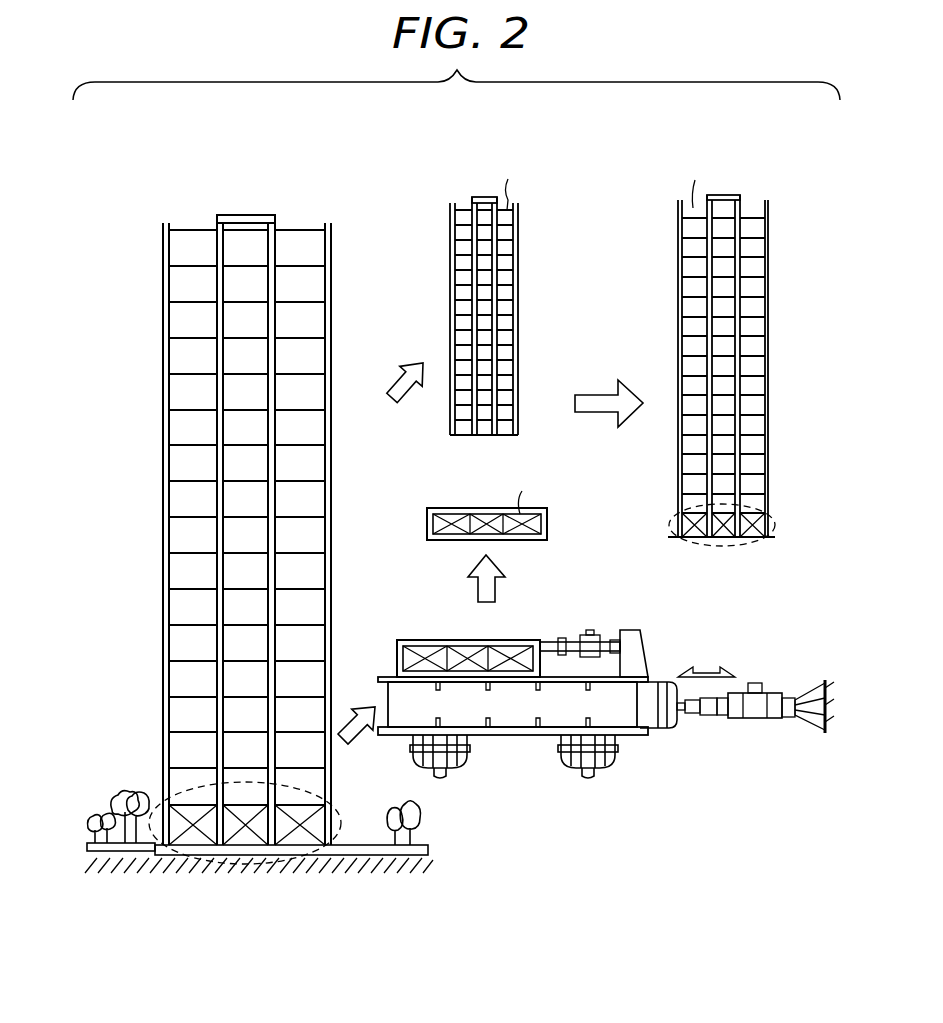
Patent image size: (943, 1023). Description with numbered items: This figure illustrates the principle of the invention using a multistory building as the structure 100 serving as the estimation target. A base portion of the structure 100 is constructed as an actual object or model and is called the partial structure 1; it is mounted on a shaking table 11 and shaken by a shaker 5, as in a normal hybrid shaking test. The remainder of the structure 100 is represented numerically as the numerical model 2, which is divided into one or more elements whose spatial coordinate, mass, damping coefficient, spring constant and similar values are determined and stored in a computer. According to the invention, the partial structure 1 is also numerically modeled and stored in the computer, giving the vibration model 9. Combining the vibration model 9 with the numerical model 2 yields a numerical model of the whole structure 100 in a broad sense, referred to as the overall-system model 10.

The structure 100 is at (332, 245).
The numerical model 2 is at (516, 297).
The overall-system model 10 is at (770, 233).
The vibration model 9 is at (547, 523).
The partial structure 1 is at (512, 641).
The shaker 5 is at (641, 641).
The shaking table 11 is at (622, 723).